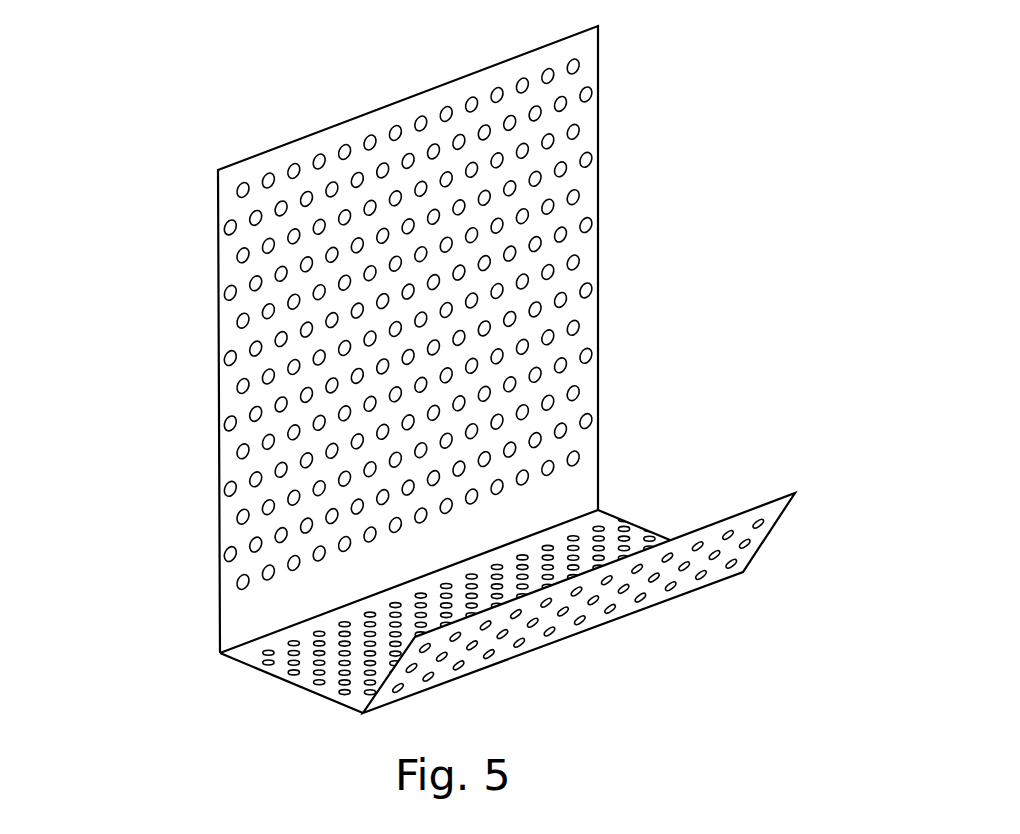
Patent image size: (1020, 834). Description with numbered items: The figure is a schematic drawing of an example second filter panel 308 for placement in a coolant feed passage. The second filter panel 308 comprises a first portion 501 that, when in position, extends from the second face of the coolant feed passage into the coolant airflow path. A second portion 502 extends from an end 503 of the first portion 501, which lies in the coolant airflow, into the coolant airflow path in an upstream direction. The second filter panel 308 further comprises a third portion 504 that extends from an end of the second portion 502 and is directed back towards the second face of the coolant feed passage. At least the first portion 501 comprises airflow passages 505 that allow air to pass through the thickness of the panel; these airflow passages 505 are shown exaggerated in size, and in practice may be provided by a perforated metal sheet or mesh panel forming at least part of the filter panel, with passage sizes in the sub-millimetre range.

The second filter panel 308 is at (190, 140).
The first portion 501 is at (218, 328).
The second portion 502 is at (292, 686).
The end of the first portion 503 is at (219, 654).
The third portion 504 is at (760, 538).
The airflow passages 505 is at (592, 158).